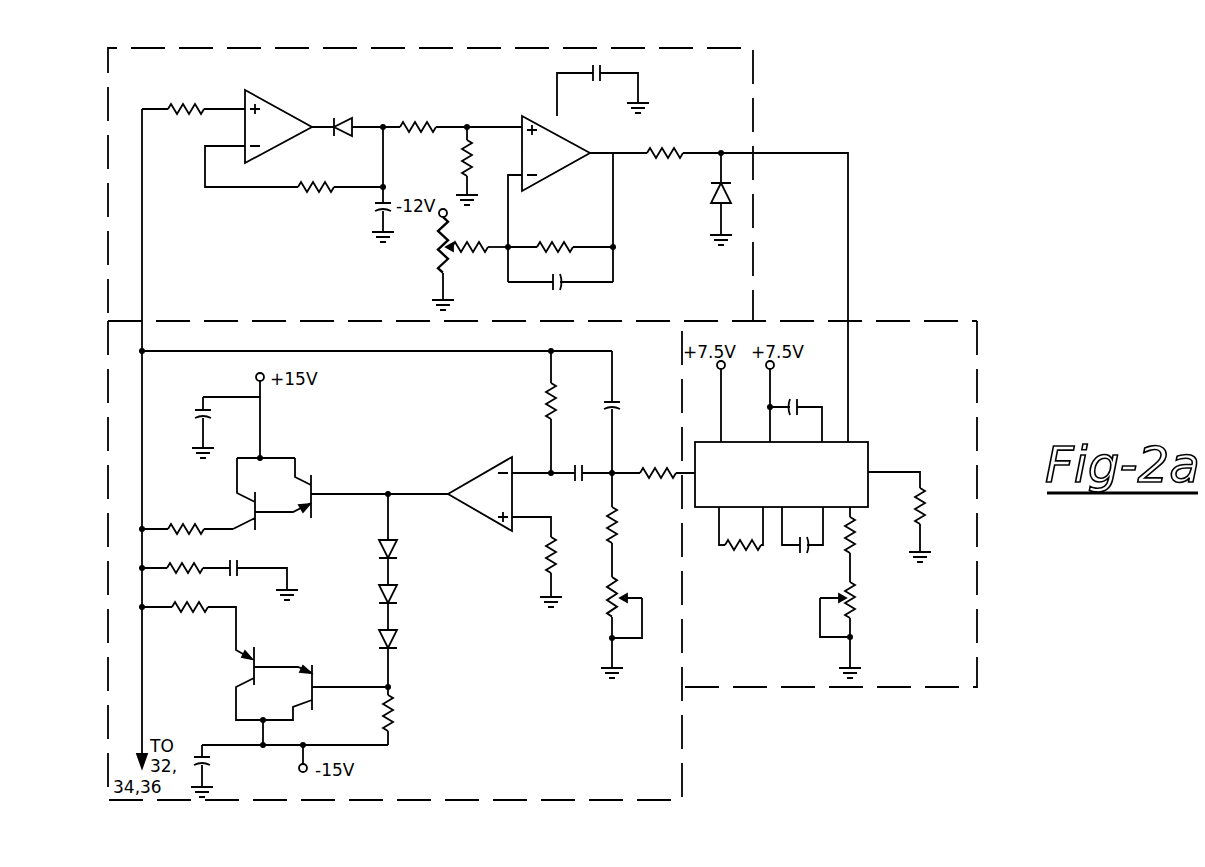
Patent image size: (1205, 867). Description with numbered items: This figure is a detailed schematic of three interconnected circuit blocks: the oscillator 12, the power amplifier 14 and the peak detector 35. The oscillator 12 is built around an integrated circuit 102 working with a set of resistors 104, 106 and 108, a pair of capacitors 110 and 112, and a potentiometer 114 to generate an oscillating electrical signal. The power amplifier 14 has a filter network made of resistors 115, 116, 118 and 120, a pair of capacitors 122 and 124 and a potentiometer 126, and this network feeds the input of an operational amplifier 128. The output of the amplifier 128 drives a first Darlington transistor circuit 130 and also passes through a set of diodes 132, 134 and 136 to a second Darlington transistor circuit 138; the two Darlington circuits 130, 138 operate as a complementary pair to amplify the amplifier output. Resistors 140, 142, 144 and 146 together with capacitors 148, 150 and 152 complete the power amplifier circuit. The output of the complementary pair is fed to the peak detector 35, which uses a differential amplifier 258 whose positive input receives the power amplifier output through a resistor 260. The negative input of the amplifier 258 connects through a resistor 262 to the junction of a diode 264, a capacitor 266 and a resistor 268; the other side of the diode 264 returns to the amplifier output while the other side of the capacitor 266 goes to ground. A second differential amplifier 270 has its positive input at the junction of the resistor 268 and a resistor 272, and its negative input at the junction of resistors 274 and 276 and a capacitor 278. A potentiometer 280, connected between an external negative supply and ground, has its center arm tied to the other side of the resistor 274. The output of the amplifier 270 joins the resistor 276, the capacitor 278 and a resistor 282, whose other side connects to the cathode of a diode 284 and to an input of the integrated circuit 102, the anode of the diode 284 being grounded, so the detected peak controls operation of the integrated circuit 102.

The oscillator 12 is at (979, 393).
The power amplifier 14 is at (177, 320).
The peak detector 35 is at (755, 125).
The integrated circuit 102 is at (795, 485).
The resistor 104 is at (743, 552).
The resistor 106 is at (923, 495).
The resistor 108 is at (855, 531).
The capacitor 110 is at (814, 550).
The capacitor 112 is at (838, 375).
The potentiometer 114 is at (858, 600).
The resistor 115 is at (680, 441).
The resistor 116 is at (622, 526).
The resistor 118 is at (546, 403).
The resistor 120 is at (561, 551).
The capacitor 122 is at (619, 404).
The capacitor 124 is at (610, 439).
The potentiometer 126 is at (617, 597).
The operational amplifier 128 is at (498, 441).
The first Darlington transistor circuit 130 is at (296, 480).
The diode 132 is at (398, 547).
The diode 134 is at (398, 593).
The diode 136 is at (398, 637).
The second Darlington transistor circuit 138 is at (300, 666).
The resistor 140 is at (398, 711).
The resistor 142 is at (214, 489).
The resistor 144 is at (177, 612).
The resistor 146 is at (186, 566).
The capacitor 148 is at (200, 416).
The capacitor 150 is at (211, 762).
The capacitor 152 is at (237, 560).
The differential amplifier 258 is at (279, 108).
The resistor 260 is at (190, 103).
The resistor 262 is at (318, 195).
The diode 264 is at (346, 116).
The capacitor 266 is at (378, 208).
The resistor 268 is at (421, 121).
The differential amplifier 270 is at (547, 178).
The resistor 272 is at (462, 163).
The resistor 274 is at (478, 252).
The resistor 276 is at (585, 223).
The capacitor 278 is at (566, 290).
The potentiometer 280 is at (440, 262).
The resistor 282 is at (663, 150).
The diode 284 is at (712, 193).